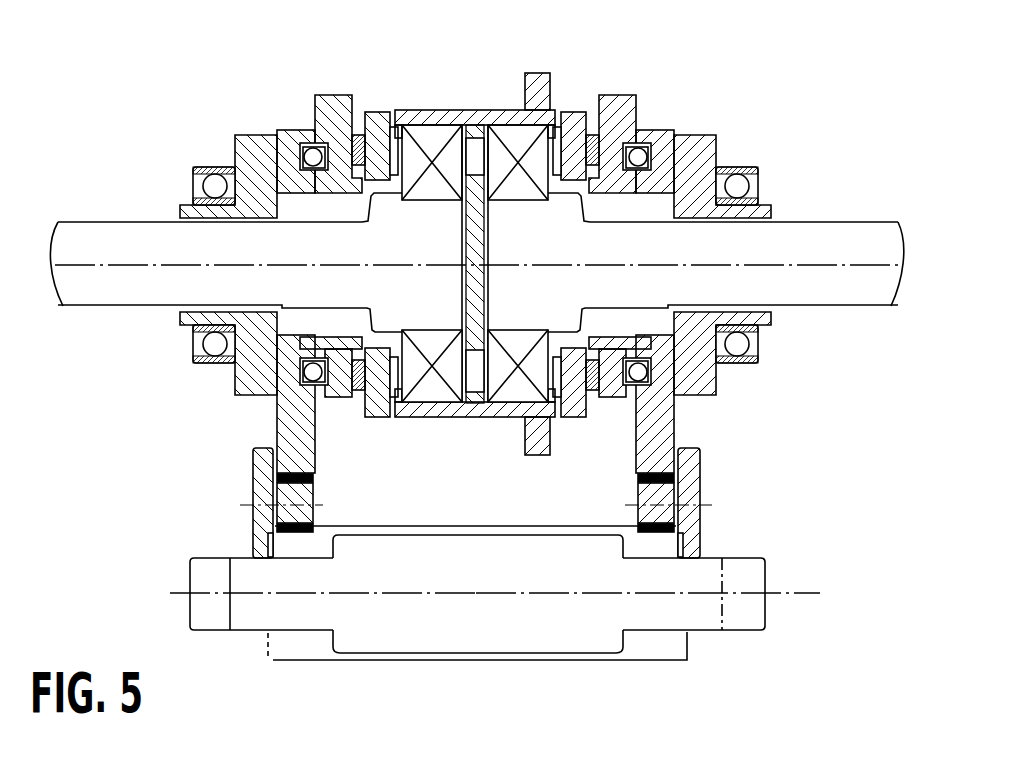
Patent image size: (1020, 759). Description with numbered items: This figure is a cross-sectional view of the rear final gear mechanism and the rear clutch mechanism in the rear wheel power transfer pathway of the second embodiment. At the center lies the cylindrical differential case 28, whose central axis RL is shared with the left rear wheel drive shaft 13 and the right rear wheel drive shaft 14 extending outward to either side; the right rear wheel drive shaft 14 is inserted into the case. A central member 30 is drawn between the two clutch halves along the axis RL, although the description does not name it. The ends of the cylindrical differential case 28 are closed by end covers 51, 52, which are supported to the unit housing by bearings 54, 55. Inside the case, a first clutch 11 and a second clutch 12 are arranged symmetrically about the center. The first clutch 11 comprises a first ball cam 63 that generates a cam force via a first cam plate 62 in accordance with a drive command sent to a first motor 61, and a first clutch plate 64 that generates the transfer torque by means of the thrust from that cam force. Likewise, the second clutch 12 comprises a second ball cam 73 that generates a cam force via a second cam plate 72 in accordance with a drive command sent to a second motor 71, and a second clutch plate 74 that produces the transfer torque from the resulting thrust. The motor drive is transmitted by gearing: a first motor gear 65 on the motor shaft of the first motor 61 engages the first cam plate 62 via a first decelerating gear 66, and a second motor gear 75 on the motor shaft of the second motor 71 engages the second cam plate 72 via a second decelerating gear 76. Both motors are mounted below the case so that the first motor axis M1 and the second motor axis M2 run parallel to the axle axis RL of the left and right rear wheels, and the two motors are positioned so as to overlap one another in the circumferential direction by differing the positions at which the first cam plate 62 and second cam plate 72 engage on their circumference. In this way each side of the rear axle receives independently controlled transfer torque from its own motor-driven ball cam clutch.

The first clutch 11 is at (376, 93).
The second clutch 12 is at (579, 89).
The left rear wheel drive shaft 13 is at (82, 222).
The right rear wheel drive shaft 14 is at (832, 238).
The cylindrical differential case 28 is at (440, 110).
The center shaft 30 is at (480, 229).
The end cover 51 is at (237, 380).
The end cover 52 is at (710, 376).
The bearing 54 is at (213, 183).
The bearing 55 is at (739, 184).
The first motor 61 is at (333, 641).
The first cam plate 62 is at (305, 456).
The first ball cam 63 is at (316, 377).
The first clutch plate 64 is at (430, 395).
The first motor gear 65 is at (256, 630).
The first decelerating gear 66 is at (256, 486).
The second motor 71 is at (625, 641).
The second cam plate 72 is at (655, 452).
The second ball cam 73 is at (636, 377).
The second clutch plate 74 is at (513, 395).
The second motor gear 75 is at (700, 628).
The second decelerating gear 76 is at (690, 473).
The axis RL is at (672, 263).
The first motor axis M1 is at (337, 592).
The second motor axis M2 is at (592, 592).